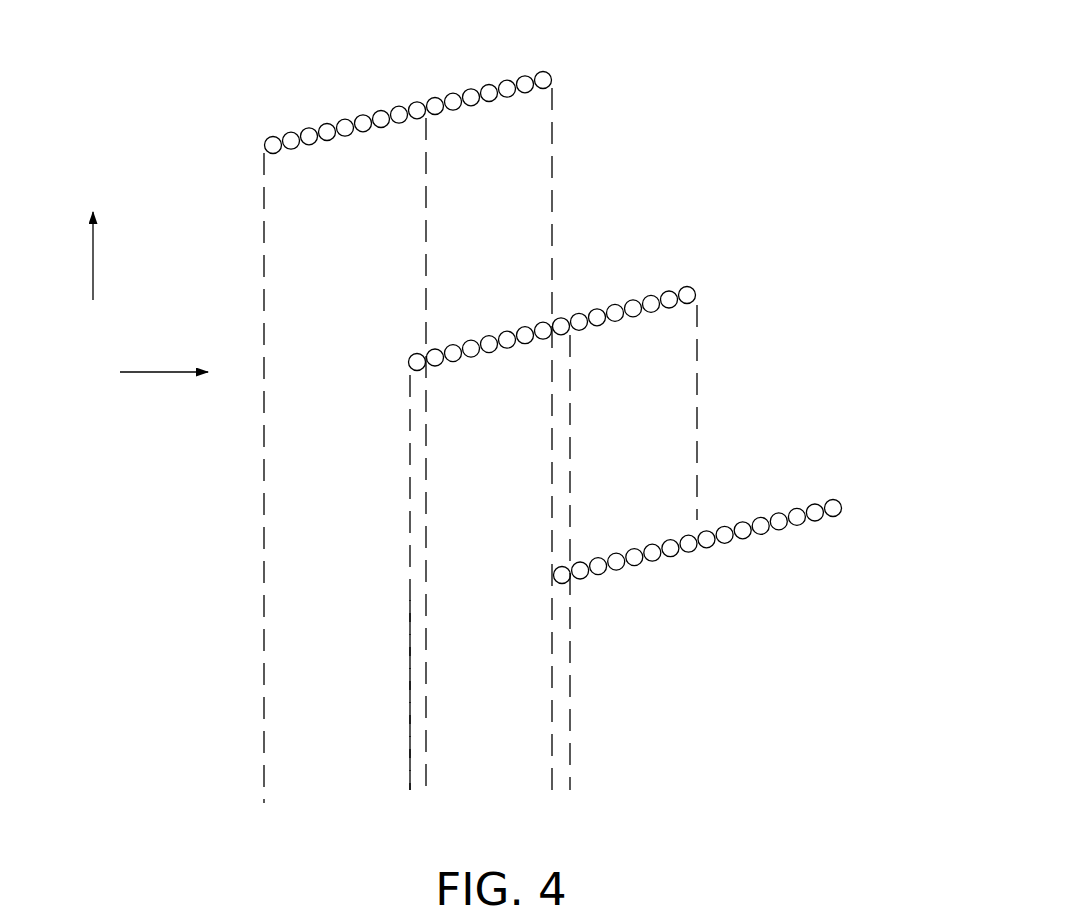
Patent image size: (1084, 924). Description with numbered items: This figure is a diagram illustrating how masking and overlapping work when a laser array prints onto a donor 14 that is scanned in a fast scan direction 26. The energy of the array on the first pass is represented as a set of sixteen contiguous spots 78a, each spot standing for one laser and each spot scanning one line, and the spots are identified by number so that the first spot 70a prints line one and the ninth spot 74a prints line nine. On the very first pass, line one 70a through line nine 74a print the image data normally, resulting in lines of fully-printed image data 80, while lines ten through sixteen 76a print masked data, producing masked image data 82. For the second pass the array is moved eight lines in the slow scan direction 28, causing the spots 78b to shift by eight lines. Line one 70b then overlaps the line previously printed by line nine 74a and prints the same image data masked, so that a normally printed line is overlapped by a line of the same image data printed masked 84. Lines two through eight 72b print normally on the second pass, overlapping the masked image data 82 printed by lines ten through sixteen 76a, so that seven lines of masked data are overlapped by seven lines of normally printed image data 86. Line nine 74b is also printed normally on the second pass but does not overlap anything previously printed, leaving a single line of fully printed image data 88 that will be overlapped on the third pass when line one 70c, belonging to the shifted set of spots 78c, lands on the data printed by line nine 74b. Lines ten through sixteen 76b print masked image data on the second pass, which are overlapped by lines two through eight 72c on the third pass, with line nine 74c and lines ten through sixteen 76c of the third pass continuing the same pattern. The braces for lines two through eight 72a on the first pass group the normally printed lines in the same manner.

The donor 14 is at (648, 166).
The fast scan direction 26 is at (93, 271).
The slow scan direction 28 is at (148, 372).
The first spot (line one) on the first pass 70a is at (273, 128).
The lines two through eight on the first pass 72a is at (339, 97).
The ninth spot (line nine) on the first pass 74a is at (417, 96).
The lines ten through sixteen on the first pass 76a is at (480, 62).
The set of sixteen contiguous spots on the first pass 78a is at (563, 75).
The line one on the second pass 70b is at (417, 345).
The lines two through eight on the second pass 72b is at (486, 313).
The line nine on the second pass 74b is at (562, 312).
The lines ten through sixteen on the second pass 76b is at (625, 278).
The set of spots on the second pass 78b is at (708, 290).
The line one on the third pass 70c is at (561, 559).
The lines two through eight on the third pass 72c is at (631, 527).
The line nine on the third pass 74c is at (705, 525).
The lines ten through sixteen on the third pass 76c is at (770, 491).
The set of spots on the third pass 78c is at (851, 503).
The lines of fully-printed image data 80 is at (285, 478).
The masked image data 82 is at (462, 208).
The normally printed line overlapped by masked same image data 84 is at (418, 422).
The masked lines overlapped by normally printed image data 86 is at (447, 520).
The single line of fully printed image data 88 is at (565, 430).